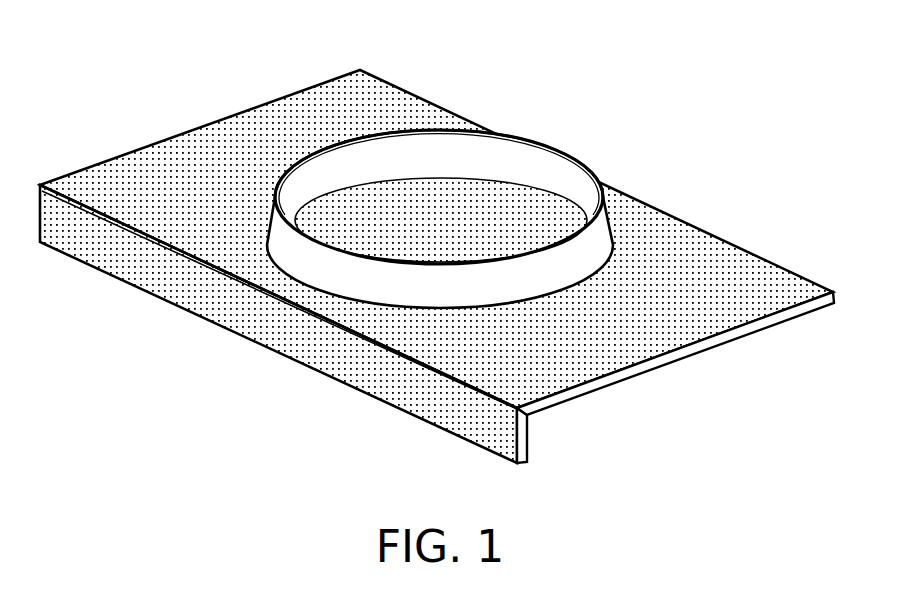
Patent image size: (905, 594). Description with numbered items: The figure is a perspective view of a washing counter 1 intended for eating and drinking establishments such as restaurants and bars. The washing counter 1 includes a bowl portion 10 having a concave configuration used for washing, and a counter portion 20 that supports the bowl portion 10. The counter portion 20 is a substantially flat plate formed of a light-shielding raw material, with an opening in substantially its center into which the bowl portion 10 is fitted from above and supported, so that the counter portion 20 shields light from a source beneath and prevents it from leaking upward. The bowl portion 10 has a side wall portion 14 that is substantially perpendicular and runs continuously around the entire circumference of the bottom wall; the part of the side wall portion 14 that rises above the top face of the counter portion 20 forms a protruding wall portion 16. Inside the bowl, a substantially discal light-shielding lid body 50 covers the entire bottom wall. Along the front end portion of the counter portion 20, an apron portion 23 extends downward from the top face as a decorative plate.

The washing counter 1 is at (437, 239).
The bowl portion 10 is at (437, 249).
The side wall portion 14 is at (323, 180).
The protruding wall portion 16 is at (406, 162).
The counter portion 20 is at (167, 178).
The apron portion 23 is at (108, 277).
The light-shielding lid body 50 is at (432, 222).